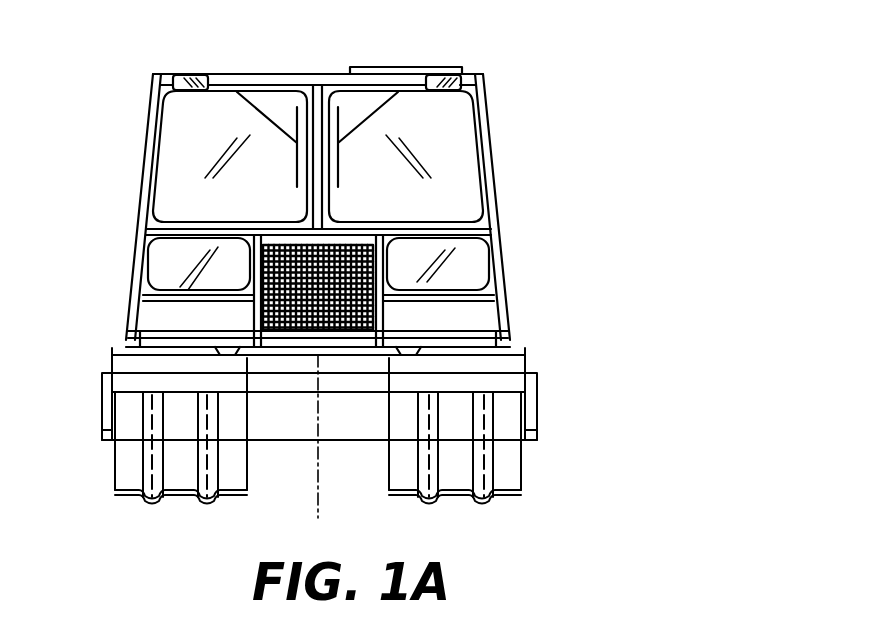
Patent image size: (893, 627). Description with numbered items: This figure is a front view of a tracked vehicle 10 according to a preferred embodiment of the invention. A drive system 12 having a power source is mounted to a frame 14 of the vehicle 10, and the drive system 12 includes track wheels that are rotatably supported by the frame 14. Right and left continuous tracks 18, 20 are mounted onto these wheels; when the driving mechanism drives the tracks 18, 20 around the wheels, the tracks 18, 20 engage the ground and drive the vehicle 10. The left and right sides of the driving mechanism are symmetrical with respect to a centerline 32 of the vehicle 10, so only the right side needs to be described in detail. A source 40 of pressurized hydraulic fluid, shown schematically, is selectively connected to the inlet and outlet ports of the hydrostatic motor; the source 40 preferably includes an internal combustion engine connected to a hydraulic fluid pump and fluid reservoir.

The tracked vehicle 10 is at (517, 58).
The drive system 12 is at (91, 457).
The frame 14 is at (108, 372).
The right continuous track 18 is at (461, 493).
The left continuous track 20 is at (180, 493).
The centerline 32 is at (322, 505).
The source of pressurized hydraulic fluid 40 is at (258, 314).